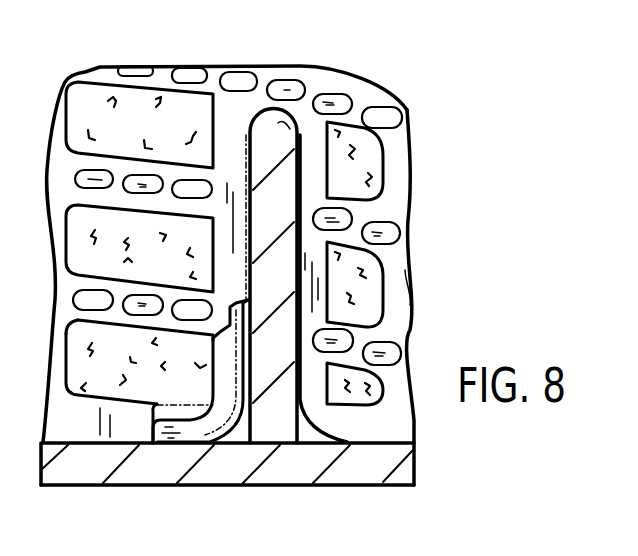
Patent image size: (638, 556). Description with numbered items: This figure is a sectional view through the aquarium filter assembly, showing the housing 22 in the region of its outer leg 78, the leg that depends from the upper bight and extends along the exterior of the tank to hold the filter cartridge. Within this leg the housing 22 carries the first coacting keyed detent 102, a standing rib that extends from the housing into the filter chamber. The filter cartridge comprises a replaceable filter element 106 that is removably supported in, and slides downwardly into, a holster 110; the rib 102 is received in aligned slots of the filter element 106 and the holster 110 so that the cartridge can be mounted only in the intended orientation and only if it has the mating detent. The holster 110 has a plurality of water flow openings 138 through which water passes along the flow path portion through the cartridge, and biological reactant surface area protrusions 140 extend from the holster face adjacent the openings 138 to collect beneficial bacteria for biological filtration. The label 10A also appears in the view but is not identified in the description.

The housing 10A is at (323, 88).
The first coacting keyed detent 102 is at (283, 183).
The replaceable filter element 106 is at (380, 278).
The water flow openings 138 is at (388, 287).
The holster 110 is at (400, 323).
The biological reactant surface area protrusions 140 is at (400, 350).
The housing 22 is at (400, 460).
The outer leg 78 is at (347, 487).